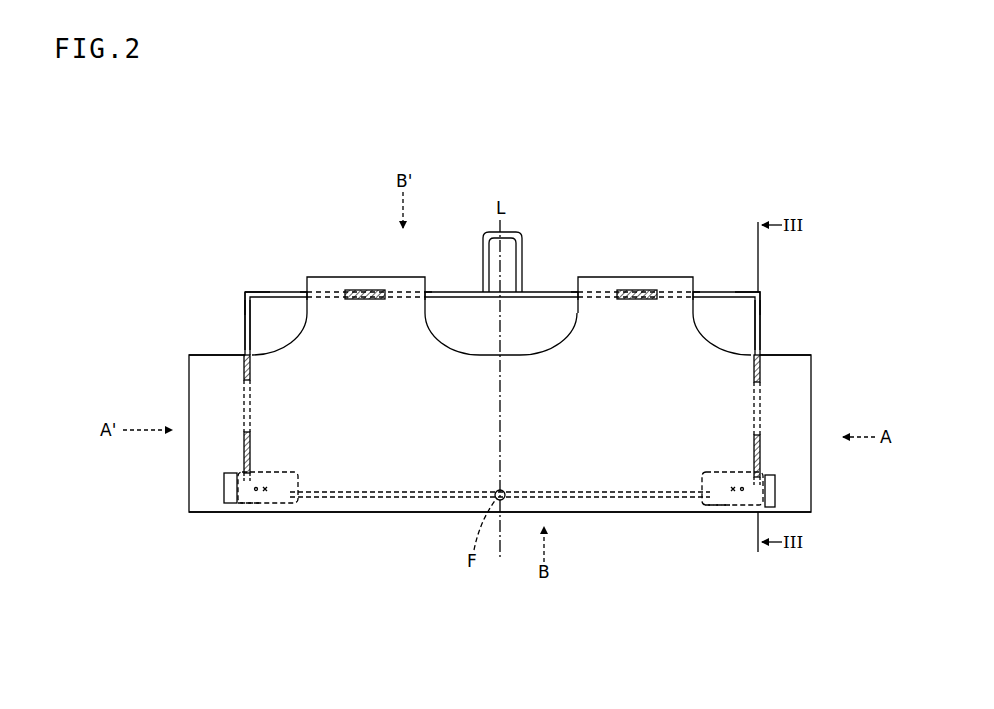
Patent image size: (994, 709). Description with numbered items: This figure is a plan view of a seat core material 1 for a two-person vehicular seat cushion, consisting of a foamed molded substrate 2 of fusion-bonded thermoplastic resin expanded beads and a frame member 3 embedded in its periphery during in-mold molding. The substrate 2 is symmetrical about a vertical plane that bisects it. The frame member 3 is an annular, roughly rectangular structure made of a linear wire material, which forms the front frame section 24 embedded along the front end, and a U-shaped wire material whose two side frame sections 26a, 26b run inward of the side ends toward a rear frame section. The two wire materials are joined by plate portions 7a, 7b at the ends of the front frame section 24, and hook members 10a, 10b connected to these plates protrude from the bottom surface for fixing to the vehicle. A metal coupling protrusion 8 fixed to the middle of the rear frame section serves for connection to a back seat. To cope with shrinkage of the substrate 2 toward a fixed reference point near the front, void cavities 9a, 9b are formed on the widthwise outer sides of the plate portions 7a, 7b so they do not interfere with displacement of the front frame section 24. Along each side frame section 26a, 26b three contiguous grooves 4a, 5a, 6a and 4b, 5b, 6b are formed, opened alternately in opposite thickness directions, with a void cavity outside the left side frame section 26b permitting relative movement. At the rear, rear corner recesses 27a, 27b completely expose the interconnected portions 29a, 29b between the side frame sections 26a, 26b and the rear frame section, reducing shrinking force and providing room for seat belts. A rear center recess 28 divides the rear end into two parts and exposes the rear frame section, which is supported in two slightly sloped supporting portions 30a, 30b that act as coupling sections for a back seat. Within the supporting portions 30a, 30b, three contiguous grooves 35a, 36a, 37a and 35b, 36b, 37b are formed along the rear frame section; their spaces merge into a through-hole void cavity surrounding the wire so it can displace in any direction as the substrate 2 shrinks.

The seat core material 1 is at (500, 388).
The foamed molded substrate 2 is at (605, 478).
The frame member 3 is at (279, 289).
The groove 4a is at (761, 452).
The groove 4b is at (243, 462).
The groove 5a is at (762, 398).
The groove 5b is at (242, 393).
The groove 6a is at (762, 372).
The groove 6b is at (241, 371).
The plate portion 7a is at (717, 506).
The plate portion 7b is at (240, 504).
The coupling protrusion 8 is at (514, 237).
The void cavity 9a is at (777, 491).
The void cavity 9b is at (224, 488).
The hook member 10a is at (736, 505).
The hook member 10b is at (256, 505).
The front frame section 24 is at (348, 512).
The side frame section 26a is at (762, 325).
The side frame section 26b is at (245, 322).
The rear corner recess 27a is at (780, 356).
The rear corner recess 27b is at (222, 353).
The rear center recess 28 is at (573, 335).
The interconnected portion 29a is at (762, 292).
The interconnected portion 29b is at (245, 291).
The supporting portion 30a is at (605, 330).
The supporting portion 30b is at (335, 318).
The groove 35a is at (697, 292).
The groove 35b is at (300, 290).
The groove 36a is at (643, 290).
The groove 36b is at (367, 290).
The groove 37a is at (573, 292).
The groove 37b is at (428, 292).